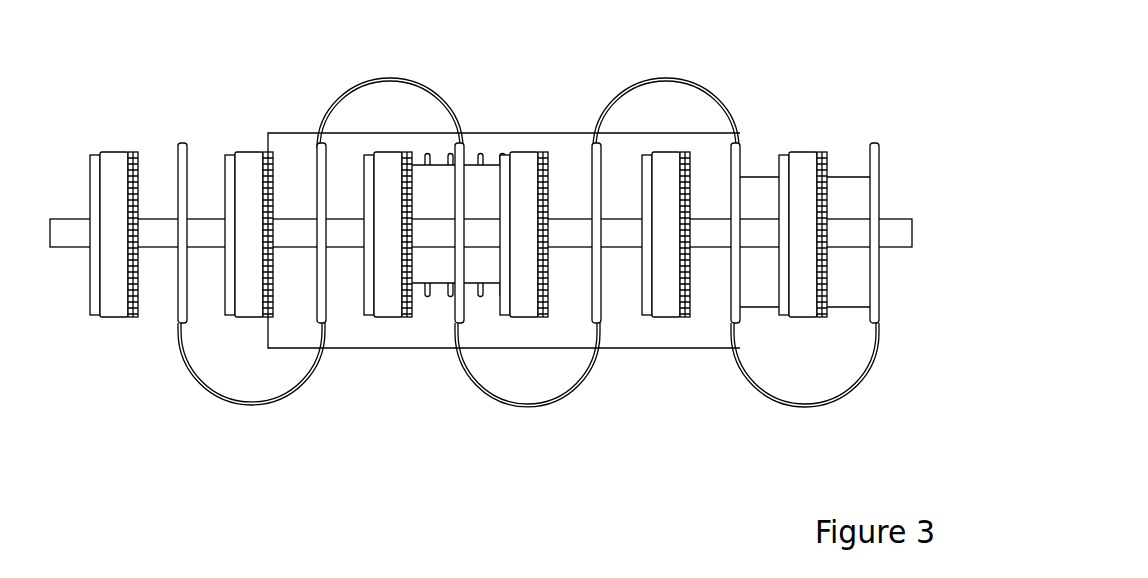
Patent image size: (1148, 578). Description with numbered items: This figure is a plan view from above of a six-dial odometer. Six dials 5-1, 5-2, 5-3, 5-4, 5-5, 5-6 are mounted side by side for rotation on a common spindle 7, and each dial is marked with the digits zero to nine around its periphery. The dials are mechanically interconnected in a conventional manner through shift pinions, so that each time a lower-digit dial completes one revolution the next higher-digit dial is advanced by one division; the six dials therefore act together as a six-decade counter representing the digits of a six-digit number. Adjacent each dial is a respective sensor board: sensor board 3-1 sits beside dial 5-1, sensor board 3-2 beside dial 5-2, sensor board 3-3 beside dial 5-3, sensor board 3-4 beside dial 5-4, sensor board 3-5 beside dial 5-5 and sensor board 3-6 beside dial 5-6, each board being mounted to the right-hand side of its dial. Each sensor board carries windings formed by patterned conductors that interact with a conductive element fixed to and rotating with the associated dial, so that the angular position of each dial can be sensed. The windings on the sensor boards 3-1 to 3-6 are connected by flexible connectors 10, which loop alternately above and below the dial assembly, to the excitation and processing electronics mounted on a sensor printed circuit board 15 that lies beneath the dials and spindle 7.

The sensor board 3-1 is at (874, 143).
The sensor board 3-2 is at (735, 143).
The sensor board 3-3 is at (596, 143).
The sensor board 3-4 is at (459, 143).
The sensor board 3-5 is at (321, 143).
The sensor board 3-6 is at (182, 143).
The dial 5-1 is at (800, 152).
The dial 5-2 is at (664, 152).
The dial 5-3 is at (524, 152).
The dial 5-4 is at (388, 152).
The dial 5-5 is at (249, 152).
The dial 5-6 is at (112, 152).
The spindle 7 is at (902, 216).
The flexible connector 10 is at (393, 78).
The sensor printed circuit board 15 is at (660, 333).